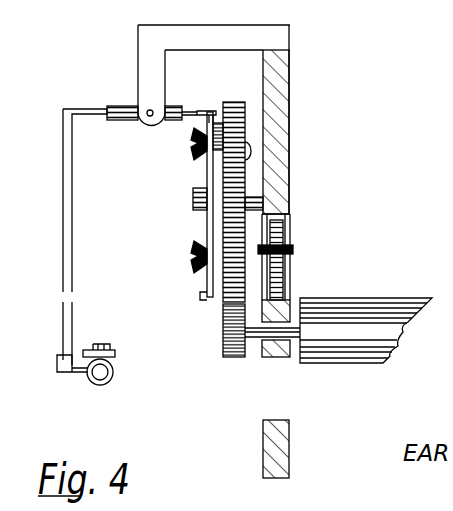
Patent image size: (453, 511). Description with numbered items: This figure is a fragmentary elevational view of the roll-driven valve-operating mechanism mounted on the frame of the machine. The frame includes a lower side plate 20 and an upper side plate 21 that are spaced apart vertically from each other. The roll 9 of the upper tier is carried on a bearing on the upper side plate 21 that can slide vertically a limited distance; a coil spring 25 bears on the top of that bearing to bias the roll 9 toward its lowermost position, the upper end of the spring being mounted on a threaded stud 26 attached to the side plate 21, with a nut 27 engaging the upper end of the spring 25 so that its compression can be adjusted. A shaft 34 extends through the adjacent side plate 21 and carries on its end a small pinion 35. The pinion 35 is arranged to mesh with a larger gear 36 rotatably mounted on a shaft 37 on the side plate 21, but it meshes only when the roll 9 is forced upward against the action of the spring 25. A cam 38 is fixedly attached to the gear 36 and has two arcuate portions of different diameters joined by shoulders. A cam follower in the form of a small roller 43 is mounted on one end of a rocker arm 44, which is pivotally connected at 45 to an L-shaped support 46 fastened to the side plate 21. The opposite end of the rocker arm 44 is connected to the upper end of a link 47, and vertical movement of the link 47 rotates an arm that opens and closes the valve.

The roll 9 is at (365, 320).
The side plate 20 is at (286, 436).
The side plate 21 is at (283, 96).
The coil spring 25 is at (283, 274).
The threaded stud 26 is at (280, 228).
The nut 27 is at (291, 249).
The shaft 34 is at (255, 340).
The pinion 35 is at (224, 332).
The gear 36 is at (212, 165).
The shaft 37 is at (262, 204).
The cam 38 is at (208, 226).
The roller 43 is at (205, 111).
The rocker arm 44 is at (168, 108).
The pivot 45 is at (147, 117).
The L-shaped support 46 is at (197, 35).
The link 47 is at (70, 229).